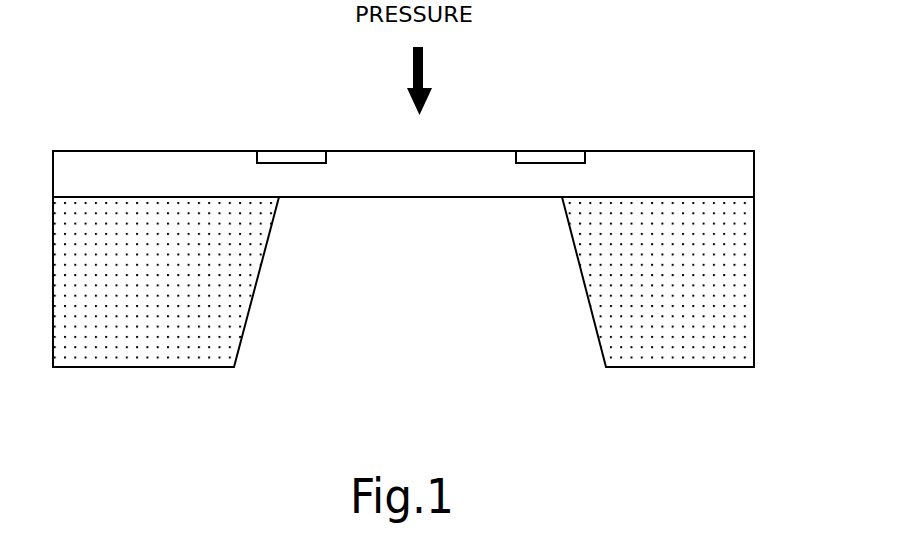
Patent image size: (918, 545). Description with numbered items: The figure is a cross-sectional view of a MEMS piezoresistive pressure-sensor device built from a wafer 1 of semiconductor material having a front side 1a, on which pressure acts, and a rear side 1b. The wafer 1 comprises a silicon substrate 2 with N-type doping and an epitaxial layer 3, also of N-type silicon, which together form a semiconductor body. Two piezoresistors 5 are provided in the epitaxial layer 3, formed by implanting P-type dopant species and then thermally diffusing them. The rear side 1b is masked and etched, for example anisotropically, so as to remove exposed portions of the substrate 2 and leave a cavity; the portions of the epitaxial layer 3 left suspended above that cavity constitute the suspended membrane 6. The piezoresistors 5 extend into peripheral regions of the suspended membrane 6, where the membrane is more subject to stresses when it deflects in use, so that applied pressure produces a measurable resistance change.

The wafer 1 is at (431, 258).
The front side 1a is at (721, 148).
The rear side 1b is at (700, 370).
The silicon substrate 2 is at (728, 300).
The epitaxial layer 3 is at (740, 163).
The piezoresistors 5 is at (268, 153).
The suspended membrane 6 is at (371, 220).